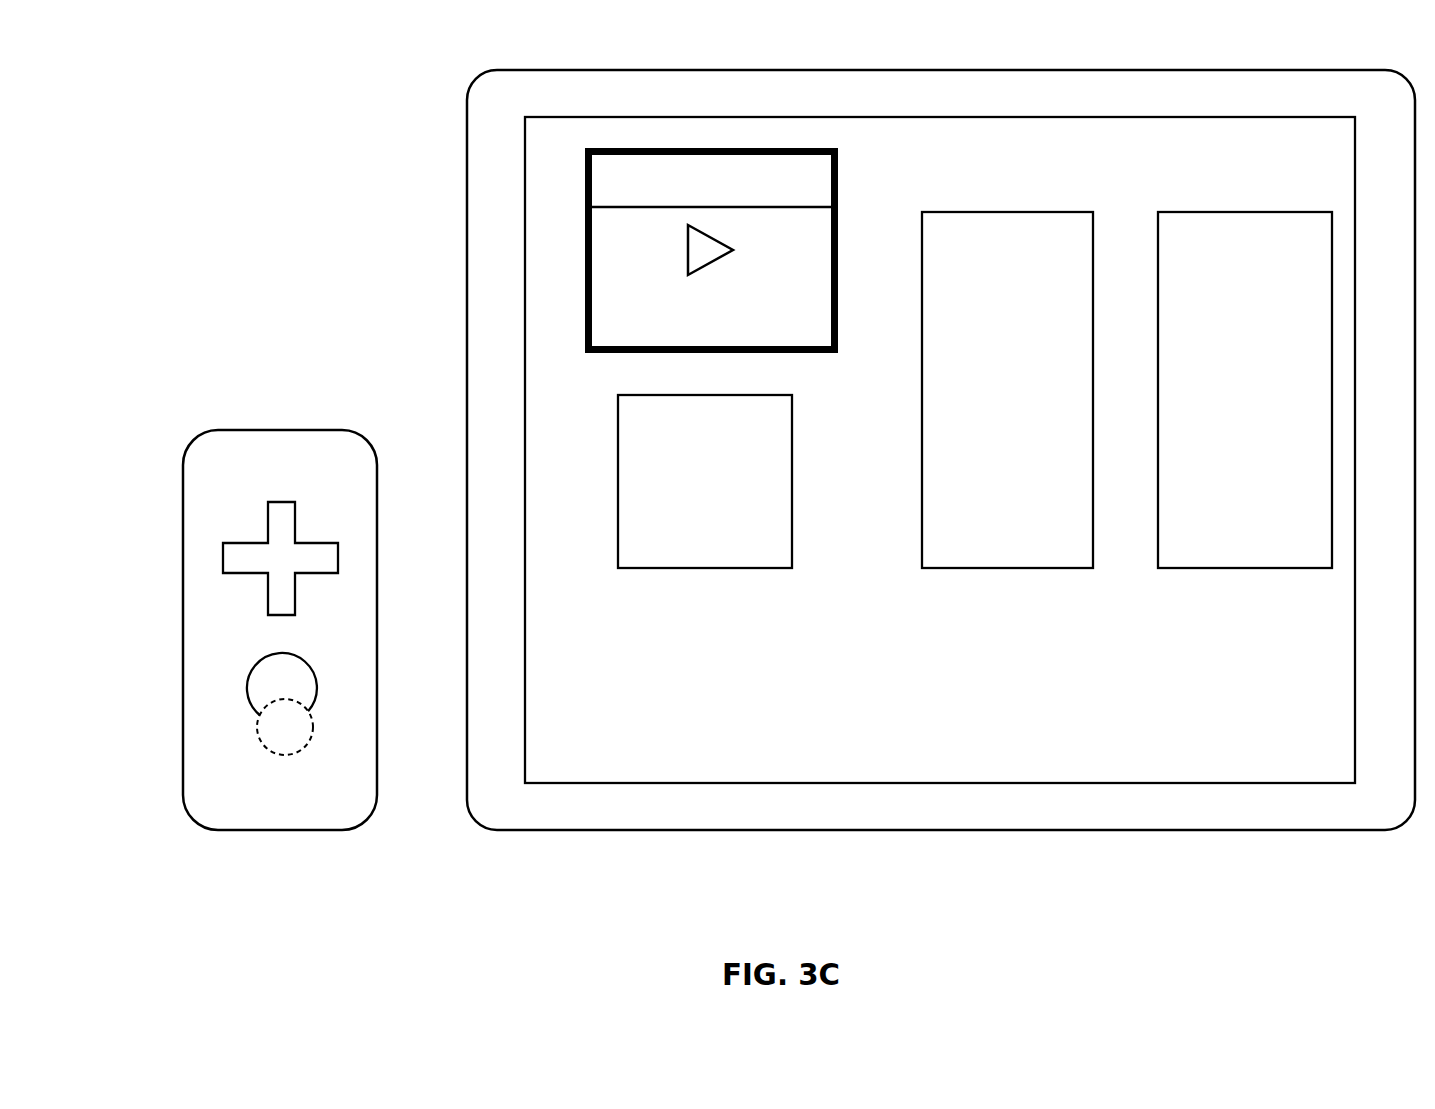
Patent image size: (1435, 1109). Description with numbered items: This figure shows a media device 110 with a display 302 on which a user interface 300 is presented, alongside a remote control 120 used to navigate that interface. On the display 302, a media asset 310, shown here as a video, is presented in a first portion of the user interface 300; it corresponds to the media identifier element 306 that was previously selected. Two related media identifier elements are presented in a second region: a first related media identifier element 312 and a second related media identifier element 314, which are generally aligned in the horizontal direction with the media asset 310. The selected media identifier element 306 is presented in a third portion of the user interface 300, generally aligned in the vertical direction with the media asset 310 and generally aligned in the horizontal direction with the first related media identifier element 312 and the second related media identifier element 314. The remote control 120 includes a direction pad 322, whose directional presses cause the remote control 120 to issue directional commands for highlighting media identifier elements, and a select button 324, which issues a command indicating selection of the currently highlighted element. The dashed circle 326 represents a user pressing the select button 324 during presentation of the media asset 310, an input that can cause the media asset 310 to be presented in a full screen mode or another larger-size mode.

The media device 110 is at (468, 190).
The remote control 120 is at (183, 472).
The user interface 300 is at (960, 152).
The display 302 is at (548, 290).
The media identifier element 306 is at (618, 423).
The media asset 310 is at (585, 180).
The first related media identifier element 312 is at (922, 227).
The second related media identifier element 314 is at (1158, 227).
The direction pad 322 is at (256, 563).
The select button 324 is at (253, 692).
The dashed circle 326 is at (287, 724).